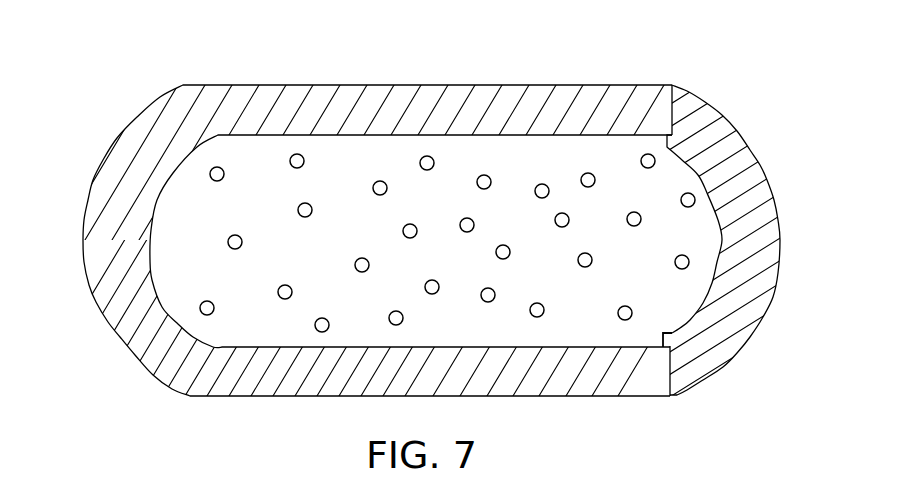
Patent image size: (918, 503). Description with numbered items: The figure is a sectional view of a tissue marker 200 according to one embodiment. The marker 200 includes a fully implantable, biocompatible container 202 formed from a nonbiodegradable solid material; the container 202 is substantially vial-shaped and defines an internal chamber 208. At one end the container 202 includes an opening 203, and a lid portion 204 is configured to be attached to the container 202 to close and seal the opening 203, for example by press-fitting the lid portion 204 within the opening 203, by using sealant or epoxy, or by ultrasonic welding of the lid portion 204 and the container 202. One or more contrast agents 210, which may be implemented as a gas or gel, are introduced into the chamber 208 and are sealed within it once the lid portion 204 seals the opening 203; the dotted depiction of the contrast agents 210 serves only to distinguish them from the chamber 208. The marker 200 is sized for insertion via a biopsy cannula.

The marker 200 is at (643, 49).
The container 202 is at (246, 88).
The opening 203 is at (668, 342).
The lid portion 204 is at (747, 163).
The internal chamber 208 is at (455, 155).
The contrast agents 210 is at (384, 181).